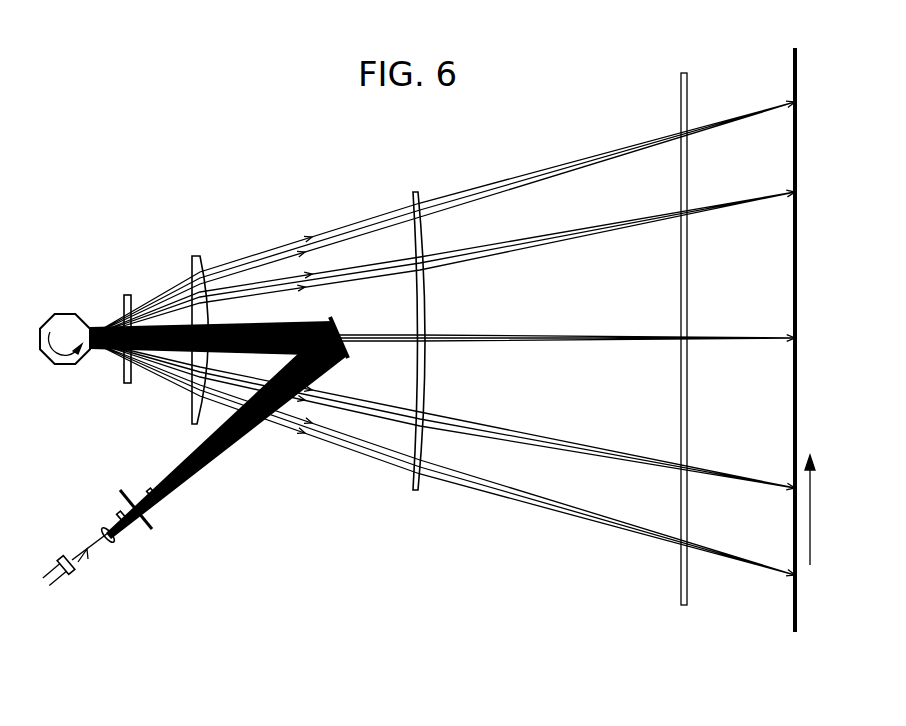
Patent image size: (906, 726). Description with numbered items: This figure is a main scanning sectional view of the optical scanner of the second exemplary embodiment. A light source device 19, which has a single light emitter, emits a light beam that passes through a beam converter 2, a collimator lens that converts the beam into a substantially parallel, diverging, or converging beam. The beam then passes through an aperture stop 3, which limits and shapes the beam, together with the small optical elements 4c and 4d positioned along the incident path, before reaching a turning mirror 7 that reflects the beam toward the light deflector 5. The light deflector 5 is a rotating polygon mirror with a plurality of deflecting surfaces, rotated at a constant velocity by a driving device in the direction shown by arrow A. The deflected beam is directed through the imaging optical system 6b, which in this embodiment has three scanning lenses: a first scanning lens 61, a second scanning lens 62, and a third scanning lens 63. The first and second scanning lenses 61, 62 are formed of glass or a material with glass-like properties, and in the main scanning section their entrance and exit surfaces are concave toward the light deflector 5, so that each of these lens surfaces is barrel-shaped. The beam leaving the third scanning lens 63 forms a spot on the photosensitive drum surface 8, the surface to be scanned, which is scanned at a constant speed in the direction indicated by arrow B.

The beam converter 2 is at (100, 528).
The aperture stop 3 is at (150, 534).
The wave plate 4c is at (118, 512).
The wave plate 4d is at (158, 503).
The light deflector 5 is at (53, 325).
The imaging optical system 6b is at (400, 136).
The turning mirror 7 is at (349, 320).
The photosensitive drum surface 8 is at (793, 56).
The light source device 19 is at (62, 560).
The first scanning lens 61 is at (126, 295).
The second scanning lens 62 is at (192, 258).
The third scanning lens 63 is at (413, 192).
The rotation direction of light deflector A is at (53, 366).
The scanning direction B is at (810, 524).